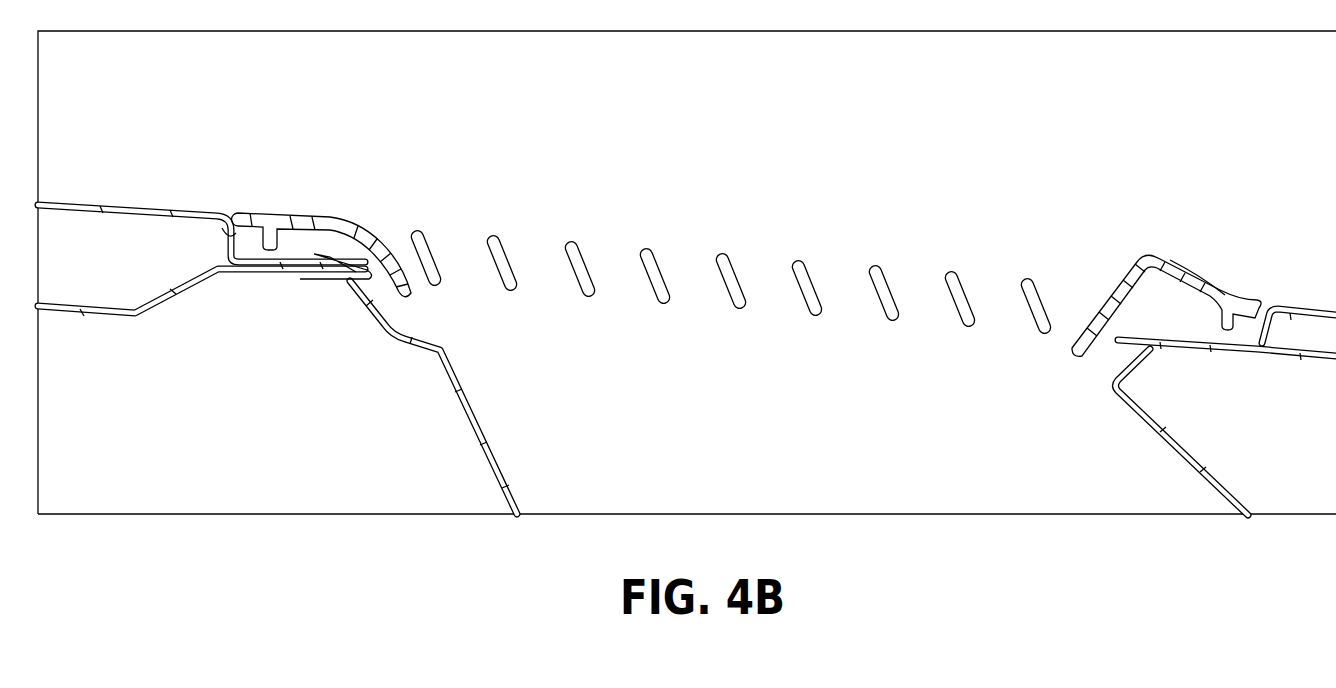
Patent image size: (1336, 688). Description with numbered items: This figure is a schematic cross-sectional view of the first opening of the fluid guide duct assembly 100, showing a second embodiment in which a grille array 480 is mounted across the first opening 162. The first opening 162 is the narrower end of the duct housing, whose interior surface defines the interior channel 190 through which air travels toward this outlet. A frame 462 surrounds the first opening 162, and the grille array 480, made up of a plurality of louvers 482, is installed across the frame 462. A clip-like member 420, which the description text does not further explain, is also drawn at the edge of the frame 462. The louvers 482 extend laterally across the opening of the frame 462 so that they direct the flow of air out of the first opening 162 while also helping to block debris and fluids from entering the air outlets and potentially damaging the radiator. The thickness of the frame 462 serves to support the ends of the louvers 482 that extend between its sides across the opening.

The assembly 100 is at (1282, 162).
The first opening 162 is at (752, 158).
The interior channel 190 is at (801, 438).
The clip 420 is at (350, 206).
The frame 462 is at (473, 312).
The grille array 480 is at (804, 238).
The louvers 482 is at (594, 246).